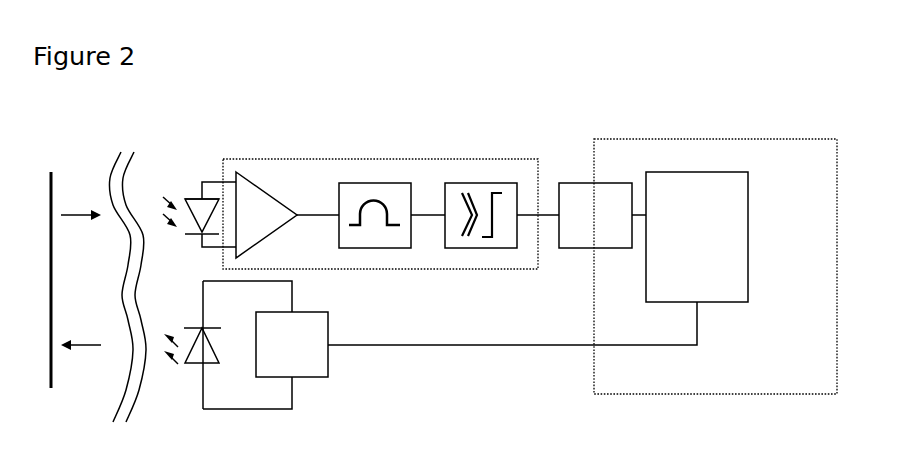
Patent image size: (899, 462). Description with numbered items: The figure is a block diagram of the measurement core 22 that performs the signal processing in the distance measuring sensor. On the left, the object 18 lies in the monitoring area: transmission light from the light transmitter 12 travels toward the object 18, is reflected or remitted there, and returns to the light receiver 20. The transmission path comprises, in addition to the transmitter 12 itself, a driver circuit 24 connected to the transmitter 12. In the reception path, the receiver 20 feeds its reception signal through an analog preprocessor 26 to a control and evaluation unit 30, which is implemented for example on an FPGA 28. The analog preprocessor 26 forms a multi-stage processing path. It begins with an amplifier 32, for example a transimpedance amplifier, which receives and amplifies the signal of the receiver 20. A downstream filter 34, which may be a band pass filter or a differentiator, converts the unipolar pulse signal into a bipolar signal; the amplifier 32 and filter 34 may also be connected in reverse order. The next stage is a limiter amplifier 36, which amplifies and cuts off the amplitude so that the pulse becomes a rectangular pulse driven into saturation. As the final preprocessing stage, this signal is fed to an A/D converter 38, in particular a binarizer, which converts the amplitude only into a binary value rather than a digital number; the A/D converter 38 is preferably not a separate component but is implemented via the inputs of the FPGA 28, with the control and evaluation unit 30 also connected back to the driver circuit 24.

The light transmitter 12 is at (228, 368).
The object 18 is at (32, 308).
The light receiver 20 is at (194, 195).
The measurement core 22 is at (678, 38).
The driver circuit 24 is at (476, 357).
The analog preprocessor 26 is at (380, 170).
The FPGA 28 is at (715, 238).
The control and evaluation unit 30 is at (693, 205).
The amplifier 32 is at (287, 188).
The filter 34 is at (392, 183).
The limiter amplifier 36 is at (502, 181).
The A/D converter 38 is at (600, 179).